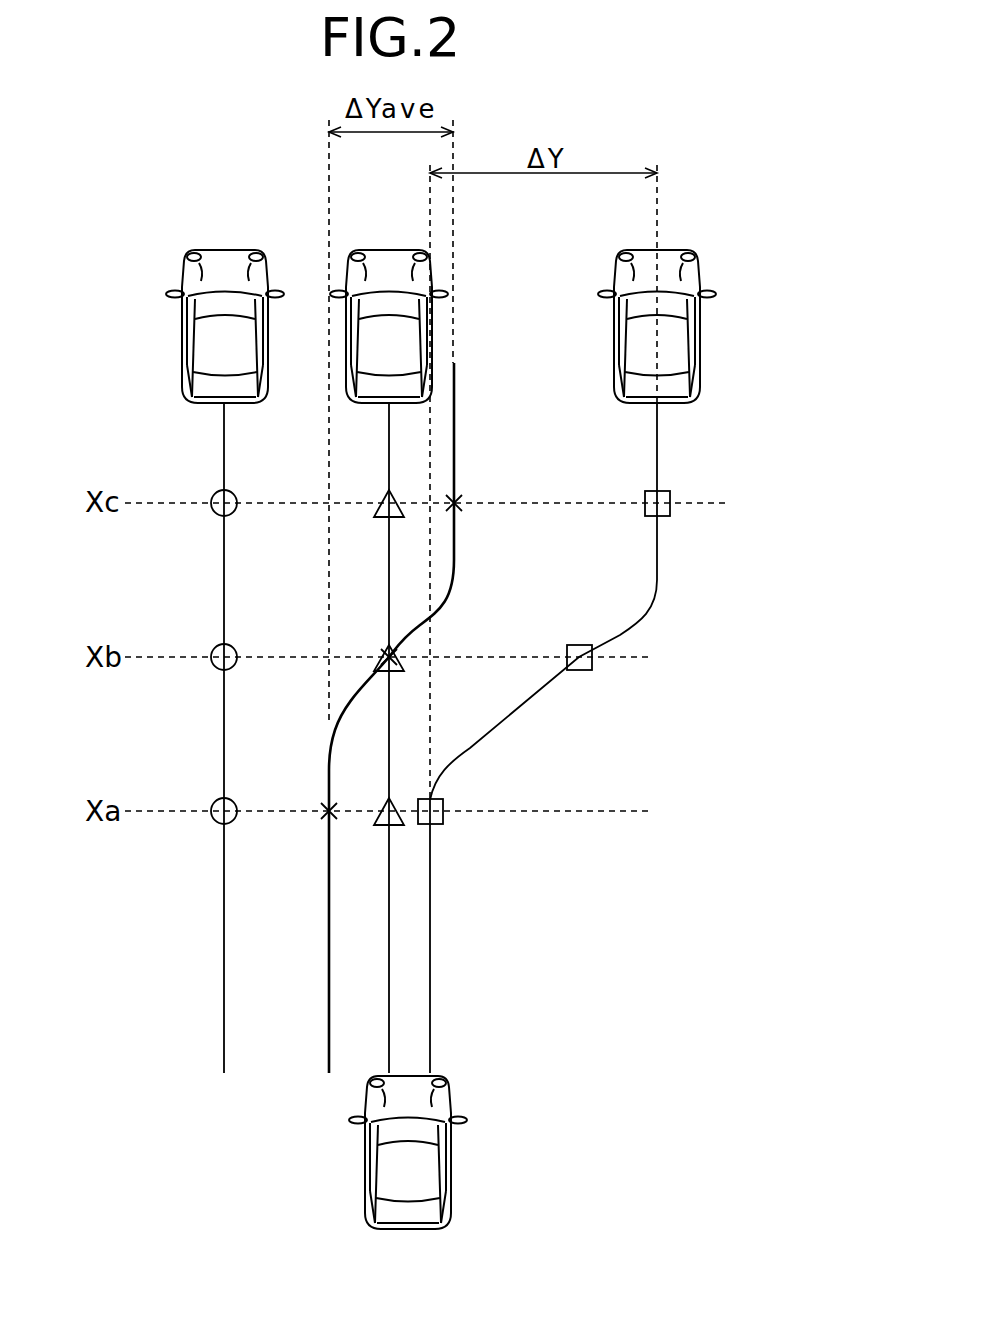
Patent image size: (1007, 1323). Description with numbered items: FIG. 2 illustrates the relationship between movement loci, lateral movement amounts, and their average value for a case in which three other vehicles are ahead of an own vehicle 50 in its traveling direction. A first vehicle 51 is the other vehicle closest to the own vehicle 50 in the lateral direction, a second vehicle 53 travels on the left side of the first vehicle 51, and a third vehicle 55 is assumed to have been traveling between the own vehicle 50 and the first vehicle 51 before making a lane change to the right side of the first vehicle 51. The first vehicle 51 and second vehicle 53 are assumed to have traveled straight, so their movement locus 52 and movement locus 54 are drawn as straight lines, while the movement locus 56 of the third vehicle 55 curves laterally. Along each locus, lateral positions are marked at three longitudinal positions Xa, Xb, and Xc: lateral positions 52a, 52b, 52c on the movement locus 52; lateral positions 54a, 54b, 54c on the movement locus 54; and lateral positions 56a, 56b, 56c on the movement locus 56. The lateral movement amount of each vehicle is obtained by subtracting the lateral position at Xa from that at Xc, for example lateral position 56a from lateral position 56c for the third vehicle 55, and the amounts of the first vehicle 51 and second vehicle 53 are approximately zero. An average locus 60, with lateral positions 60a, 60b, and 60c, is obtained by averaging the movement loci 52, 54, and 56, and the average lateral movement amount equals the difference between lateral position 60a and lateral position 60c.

The own vehicle 50 is at (452, 1200).
The first vehicle 51 is at (385, 248).
The movement locus of the first vehicle 52 is at (389, 452).
The lateral position 52a is at (381, 825).
The lateral position 52b is at (382, 672).
The lateral position 52c is at (380, 517).
The second vehicle 53 is at (182, 348).
The movement locus of the second vehicle 54 is at (224, 452).
The lateral position 54a is at (212, 822).
The lateral position 54b is at (212, 667).
The lateral position 54c is at (213, 513).
The third vehicle 55 is at (700, 341).
The movement locus of the third vehicle 56 is at (658, 449).
The lateral position 56a is at (443, 823).
The lateral position 56b is at (592, 668).
The lateral position 56c is at (670, 514).
The average locus 60 is at (455, 418).
The lateral position 60a is at (326, 814).
The lateral position 60b is at (396, 663).
The lateral position 60c is at (460, 508).